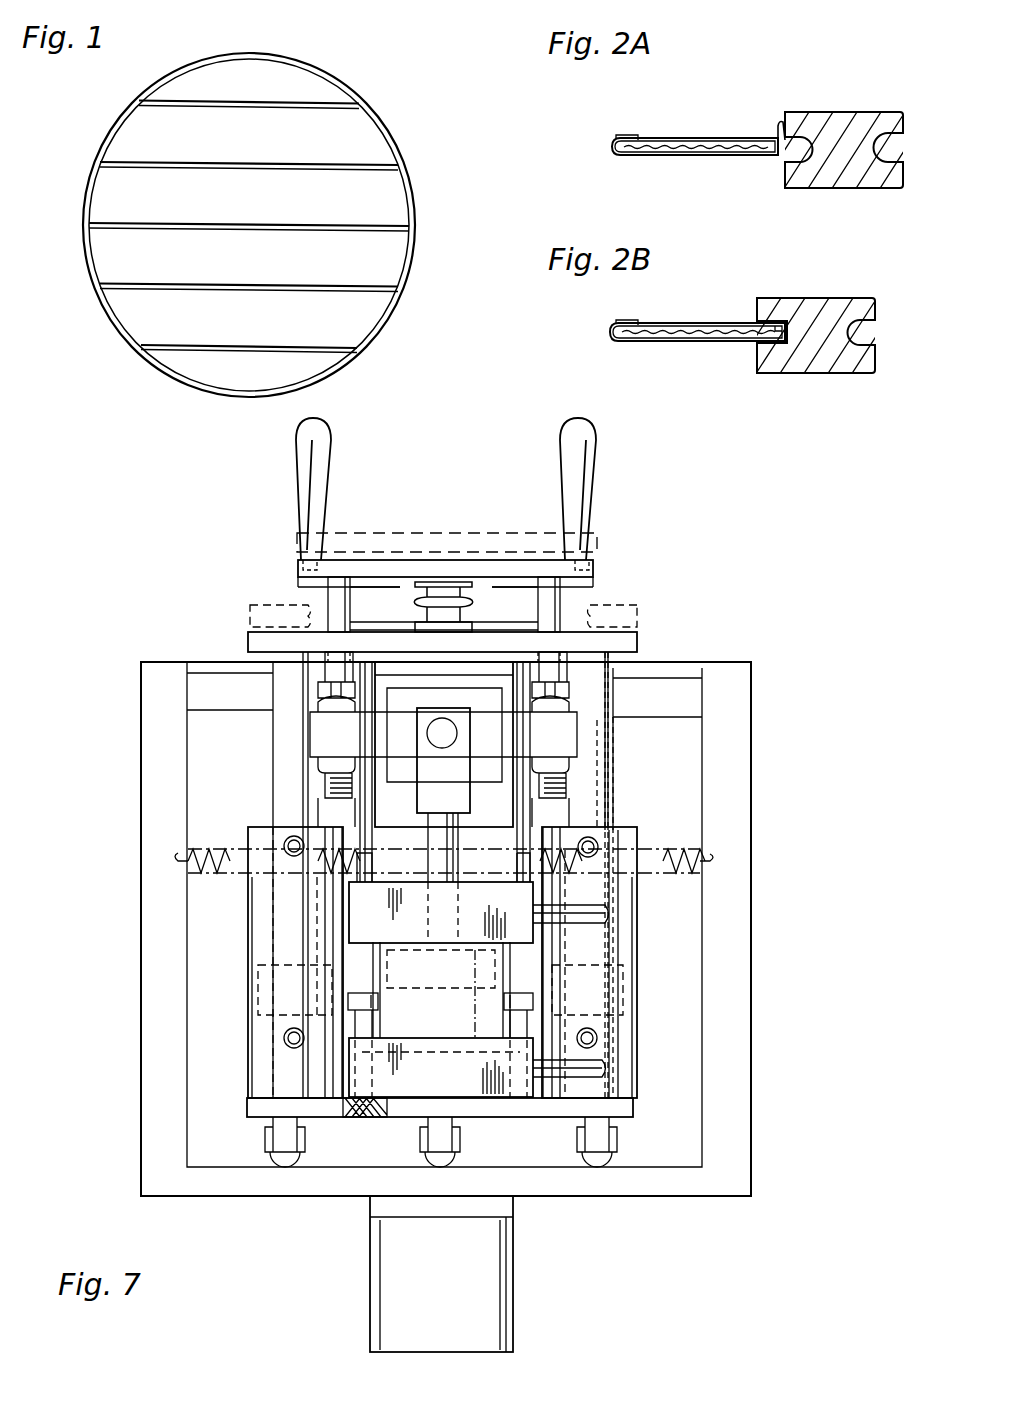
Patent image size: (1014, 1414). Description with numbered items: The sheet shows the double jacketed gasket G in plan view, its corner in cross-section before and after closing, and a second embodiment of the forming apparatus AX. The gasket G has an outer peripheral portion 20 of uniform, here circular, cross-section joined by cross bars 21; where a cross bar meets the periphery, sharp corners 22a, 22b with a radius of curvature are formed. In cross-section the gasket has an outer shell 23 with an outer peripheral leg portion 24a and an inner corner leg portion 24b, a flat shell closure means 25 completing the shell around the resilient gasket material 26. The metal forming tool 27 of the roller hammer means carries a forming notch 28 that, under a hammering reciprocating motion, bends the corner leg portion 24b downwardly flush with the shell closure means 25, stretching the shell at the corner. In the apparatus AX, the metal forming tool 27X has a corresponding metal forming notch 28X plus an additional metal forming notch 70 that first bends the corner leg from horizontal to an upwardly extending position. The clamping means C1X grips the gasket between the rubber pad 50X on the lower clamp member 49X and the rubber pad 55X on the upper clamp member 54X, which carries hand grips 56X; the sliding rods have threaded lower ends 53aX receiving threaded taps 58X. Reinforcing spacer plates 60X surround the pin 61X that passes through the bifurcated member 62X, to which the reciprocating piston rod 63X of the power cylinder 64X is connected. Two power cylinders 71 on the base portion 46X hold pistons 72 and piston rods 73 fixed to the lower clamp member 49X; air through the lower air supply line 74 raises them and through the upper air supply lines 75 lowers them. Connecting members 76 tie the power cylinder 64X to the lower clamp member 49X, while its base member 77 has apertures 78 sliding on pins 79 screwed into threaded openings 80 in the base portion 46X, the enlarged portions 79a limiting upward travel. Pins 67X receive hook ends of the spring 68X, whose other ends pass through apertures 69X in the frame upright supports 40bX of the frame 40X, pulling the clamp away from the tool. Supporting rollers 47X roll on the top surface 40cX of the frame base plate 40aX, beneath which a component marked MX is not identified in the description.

In FIG. 1, the double jacketed gasket G is at (345, 70).
In FIG. 1, the outer peripheral portion 20 is at (398, 142).
In FIG. 1, the cross bars 21 is at (207, 108).
In FIG. 1, the corner 22a is at (391, 302).
In FIG. 1, the corner 22b is at (387, 282).
In FIG. 2A, the outer shell 23 is at (648, 156).
In FIG. 2B, the outer shell 23 is at (680, 342).
In FIG. 2A, the outer peripheral leg portion 24a is at (624, 134).
In FIG. 2B, the outer peripheral leg portion 24a is at (626, 322).
In FIG. 2A, the inner corner leg portion 24b is at (776, 130).
In FIG. 2B, the inner corner leg portion 24b is at (765, 326).
In FIG. 2A, the flat shell closure means 25 is at (660, 141).
In FIG. 2B, the flat shell closure means 25 is at (676, 326).
In FIG. 2A, the resilient gasket material 26 is at (616, 150).
In FIG. 2B, the resilient gasket material 26 is at (652, 341).
In FIG. 2A, the metal forming tool 27 is at (836, 112).
In FIG. 2B, the metal forming tool 27 is at (816, 298).
In FIG. 2A, the forming notch 28 is at (887, 165).
In FIG. 2B, the forming notch 28 is at (858, 352).
In FIG. 7, the hand grips 56X is at (298, 470).
In FIG. 7, the clamping means C1X is at (368, 526).
In FIG. 7, the metal forming tool 27X is at (440, 582).
In FIG. 7, the metal forming notch 28X is at (465, 590).
In FIG. 7, the apparatus AX is at (614, 541).
In FIG. 7, the rubber pad 55X is at (300, 582).
In FIG. 7, the upper clamp member 54X is at (597, 572).
In FIG. 7, the lower end of sliding rod 53aX is at (552, 602).
In FIG. 7, the rubber pad 50X is at (252, 619).
In FIG. 7, the additional metal forming notch 70 is at (462, 605).
In FIG. 7, the lower clamp member 49X is at (640, 642).
In FIG. 7, the frame 40X is at (668, 666).
In FIG. 7, the threaded taps 58X is at (568, 708).
In FIG. 7, the pin 61X is at (428, 734).
In FIG. 7, the reinforcing spacer plates 60X is at (481, 700).
In FIG. 7, the bifurcated member 62X is at (461, 789).
In FIG. 7, the upper air supply lines 75 is at (292, 836).
In FIG. 7, the connecting members 76 is at (363, 801).
In FIG. 7, the spring 68X is at (682, 856).
In FIG. 7, the reciprocating piston rod 63X is at (438, 841).
In FIG. 7, the pins 67X is at (517, 868).
In FIG. 7, the apertures 69X is at (712, 862).
In FIG. 7, the piston rods 73 is at (270, 902).
In FIG. 7, the frame upright supports 40bX is at (733, 930).
In FIG. 7, the pistons 72 is at (262, 984).
In FIG. 7, the enlarged portion 79a is at (508, 999).
In FIG. 7, the power cylinder 64X is at (458, 1012).
In FIG. 7, the pins 79 is at (515, 1025).
In FIG. 7, the lower air supply line 74 is at (284, 1040).
In FIG. 7, the apertures 78 is at (470, 1052).
In FIG. 7, the power cylinders 71 is at (252, 1060).
In FIG. 7, the base member 77 is at (449, 1086).
In FIG. 7, the base portion 46X is at (633, 1110).
In FIG. 7, the top surface 40cX is at (216, 1176).
In FIG. 7, the threaded openings 80 is at (360, 1120).
In FIG. 7, the supporting rollers 47X is at (580, 1142).
In FIG. 7, the frame base plate 40aX is at (640, 1198).
In FIG. 7, the motor MX is at (441, 1274).